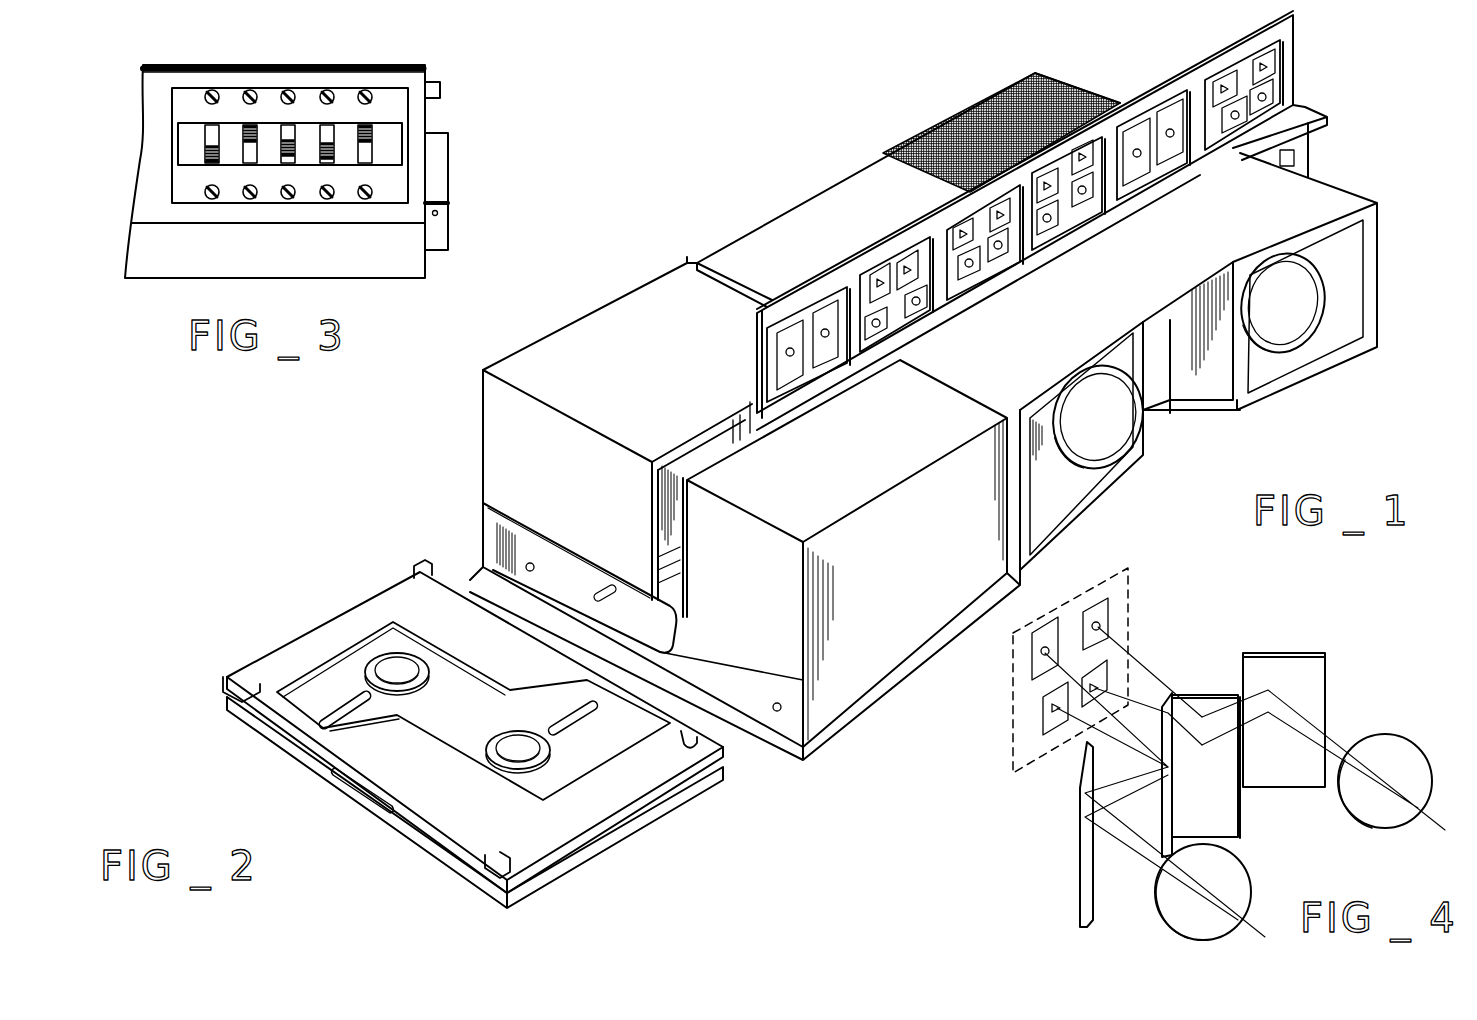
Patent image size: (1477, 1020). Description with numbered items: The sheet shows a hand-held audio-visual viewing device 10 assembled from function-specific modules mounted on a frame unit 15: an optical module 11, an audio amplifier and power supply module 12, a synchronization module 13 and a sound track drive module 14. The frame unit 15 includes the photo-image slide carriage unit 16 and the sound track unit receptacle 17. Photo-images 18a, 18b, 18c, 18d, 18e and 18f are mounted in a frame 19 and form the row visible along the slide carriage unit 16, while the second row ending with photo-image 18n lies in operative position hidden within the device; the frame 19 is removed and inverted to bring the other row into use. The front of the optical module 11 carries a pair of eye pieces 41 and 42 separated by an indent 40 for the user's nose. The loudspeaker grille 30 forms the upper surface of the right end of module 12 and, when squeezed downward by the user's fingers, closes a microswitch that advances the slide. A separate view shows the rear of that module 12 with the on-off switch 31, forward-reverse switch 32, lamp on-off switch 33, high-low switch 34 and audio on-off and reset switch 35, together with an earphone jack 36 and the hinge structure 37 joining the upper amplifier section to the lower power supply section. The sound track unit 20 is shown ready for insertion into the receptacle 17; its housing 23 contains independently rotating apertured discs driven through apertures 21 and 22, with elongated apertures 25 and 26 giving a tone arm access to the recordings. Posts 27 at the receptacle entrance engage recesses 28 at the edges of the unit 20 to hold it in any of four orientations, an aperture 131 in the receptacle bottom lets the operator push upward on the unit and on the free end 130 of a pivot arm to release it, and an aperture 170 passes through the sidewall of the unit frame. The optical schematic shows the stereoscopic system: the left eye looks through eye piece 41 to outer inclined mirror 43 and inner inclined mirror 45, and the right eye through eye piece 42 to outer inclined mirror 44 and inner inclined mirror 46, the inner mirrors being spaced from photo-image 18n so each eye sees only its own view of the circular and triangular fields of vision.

In FIG. 1, the device 10 is at (743, 208).
In FIG. 1, the optical module 11 is at (1208, 244).
In FIG. 3, the audio amplifier and power supply module 12 is at (146, 51).
In FIG. 1, the audio amplifier and power supply module 12 is at (880, 204).
In FIG. 1, the synchronization module 13 is at (838, 464).
In FIG. 1, the sound track drive module 14 is at (662, 406).
In FIG. 1, the frame unit 15 is at (890, 682).
In FIG. 1, the photo-image slide carriage unit 16 is at (1305, 145).
In FIG. 1, the sound track unit receptacle 17 is at (688, 660).
In FIG. 1, the photo-image 18a is at (807, 305).
In FIG. 1, the photo-image 18b is at (880, 258).
In FIG. 1, the photo-image 18c is at (952, 230).
In FIG. 1, the photo-image 18d is at (1068, 215).
In FIG. 1, the photo-image 18e is at (1152, 108).
In FIG. 1, the photo-image 18f is at (1243, 70).
In FIG. 1, the photo-image 18n is at (1285, 163).
In FIG. 4, the photo-image 18n is at (1120, 622).
In FIG. 1, the frame 19 is at (1285, 28).
In FIG. 2, the sound track unit 20 is at (658, 820).
In FIG. 2, the aperture 21 is at (392, 673).
In FIG. 2, the aperture 22 is at (510, 752).
In FIG. 2, the housing 23 is at (335, 628).
In FIG. 2, the elongated aperture 25 is at (372, 697).
In FIG. 2, the elongated aperture 26 is at (586, 713).
In FIG. 1, the posts 27 is at (534, 570).
In FIG. 2, the recesses 28 is at (420, 566).
In FIG. 3, the loudspeaker grille 30 is at (311, 62).
In FIG. 1, the loudspeaker grille 30 is at (982, 115).
In FIG. 3, the on-off switch 31 is at (200, 138).
In FIG. 3, the forward-reverse switch 32 is at (238, 142).
In FIG. 3, the on-off switch 33 is at (280, 153).
In FIG. 3, the high-low switch 34 is at (319, 150).
In FIG. 3, the audio on-off and reset switch 35 is at (354, 153).
In FIG. 3, the earphone jack 36 is at (441, 90).
In FIG. 3, the hinge structure 37 is at (449, 191).
In FIG. 1, the indent 40 is at (1165, 428).
In FIG. 1, the eye piece 41 is at (1103, 432).
In FIG. 4, the eye piece 41 is at (1253, 880).
In FIG. 1, the eye piece 42 is at (1292, 316).
In FIG. 4, the eye piece 42 is at (1388, 735).
In FIG. 4, the outer inclined mirror 43 is at (1078, 830).
In FIG. 4, the outer inclined mirror 44 is at (1328, 700).
In FIG. 4, the inner inclined mirror 45 is at (1163, 827).
In FIG. 4, the inner inclined mirror 46 is at (1220, 818).
In FIG. 1, the free end 130 is at (655, 610).
In FIG. 1, the aperture 131 is at (688, 636).
In FIG. 2, the aperture 170 is at (362, 792).